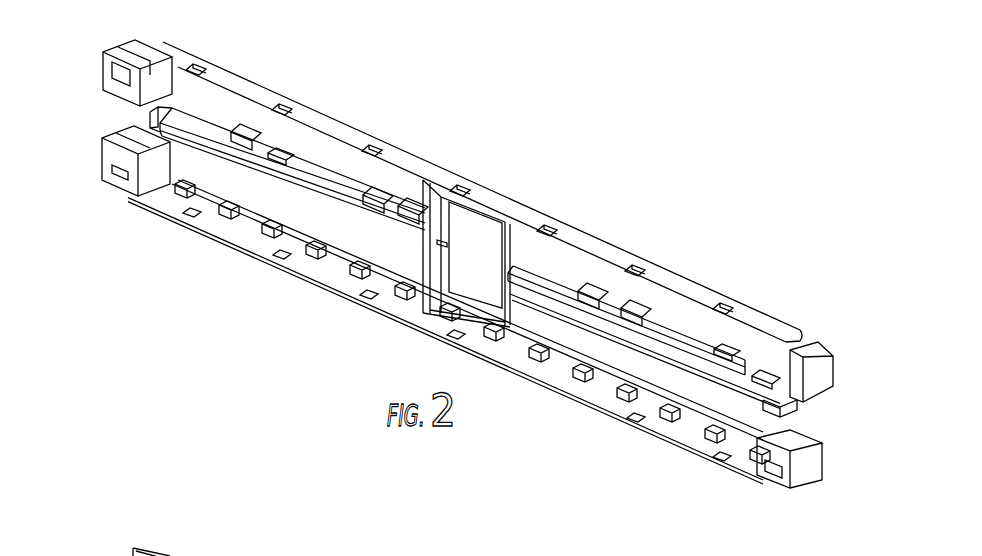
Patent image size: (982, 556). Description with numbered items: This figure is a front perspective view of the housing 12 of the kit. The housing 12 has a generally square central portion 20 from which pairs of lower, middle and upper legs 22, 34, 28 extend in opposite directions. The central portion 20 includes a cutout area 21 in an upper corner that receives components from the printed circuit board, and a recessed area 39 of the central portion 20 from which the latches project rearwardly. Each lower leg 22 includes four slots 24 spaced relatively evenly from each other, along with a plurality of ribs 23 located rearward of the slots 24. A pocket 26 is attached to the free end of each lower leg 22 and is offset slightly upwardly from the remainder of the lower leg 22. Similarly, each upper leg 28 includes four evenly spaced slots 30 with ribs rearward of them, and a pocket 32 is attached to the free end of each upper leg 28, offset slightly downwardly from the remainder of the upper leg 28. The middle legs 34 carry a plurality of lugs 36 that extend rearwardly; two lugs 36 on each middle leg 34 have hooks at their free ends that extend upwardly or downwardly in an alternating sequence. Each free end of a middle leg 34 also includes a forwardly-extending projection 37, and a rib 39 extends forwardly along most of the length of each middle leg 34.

The housing 12 is at (459, 285).
The central portion 20 is at (478, 238).
The cutout area 21 is at (500, 228).
The lower legs 22 is at (680, 437).
The ribs 23 is at (220, 217).
The slots 24 is at (723, 467).
The pocket 26 is at (771, 498).
The upper legs 28 is at (600, 250).
The slots 30 is at (280, 107).
The pocket 32 is at (807, 350).
The middle legs 34 is at (717, 310).
The lugs 36 is at (633, 307).
The projection 37 is at (777, 415).
The rib 39 is at (597, 310).